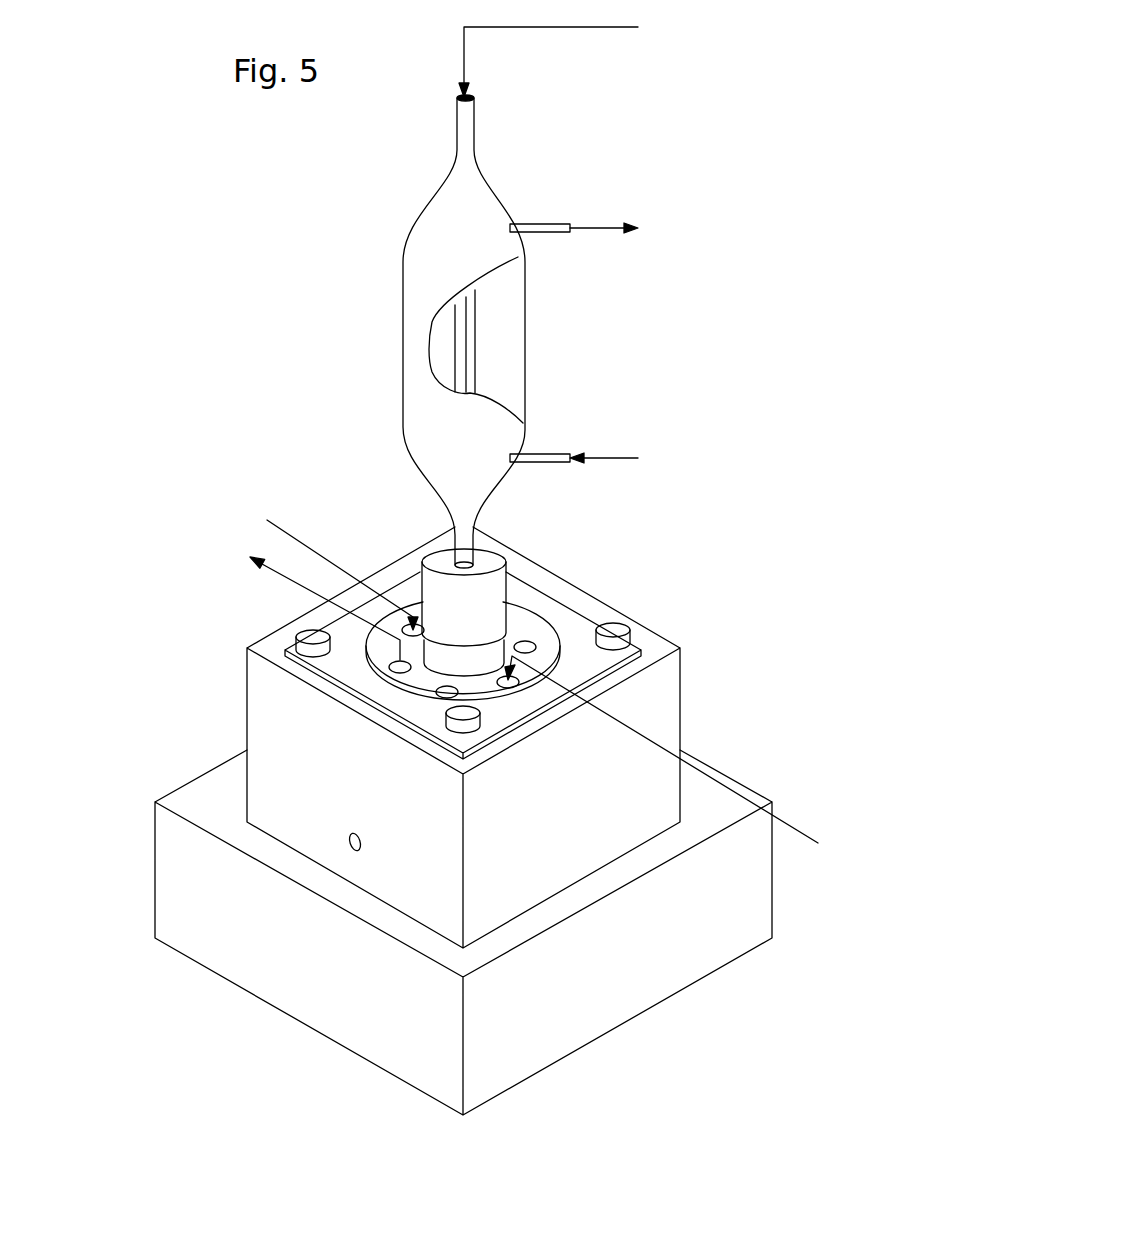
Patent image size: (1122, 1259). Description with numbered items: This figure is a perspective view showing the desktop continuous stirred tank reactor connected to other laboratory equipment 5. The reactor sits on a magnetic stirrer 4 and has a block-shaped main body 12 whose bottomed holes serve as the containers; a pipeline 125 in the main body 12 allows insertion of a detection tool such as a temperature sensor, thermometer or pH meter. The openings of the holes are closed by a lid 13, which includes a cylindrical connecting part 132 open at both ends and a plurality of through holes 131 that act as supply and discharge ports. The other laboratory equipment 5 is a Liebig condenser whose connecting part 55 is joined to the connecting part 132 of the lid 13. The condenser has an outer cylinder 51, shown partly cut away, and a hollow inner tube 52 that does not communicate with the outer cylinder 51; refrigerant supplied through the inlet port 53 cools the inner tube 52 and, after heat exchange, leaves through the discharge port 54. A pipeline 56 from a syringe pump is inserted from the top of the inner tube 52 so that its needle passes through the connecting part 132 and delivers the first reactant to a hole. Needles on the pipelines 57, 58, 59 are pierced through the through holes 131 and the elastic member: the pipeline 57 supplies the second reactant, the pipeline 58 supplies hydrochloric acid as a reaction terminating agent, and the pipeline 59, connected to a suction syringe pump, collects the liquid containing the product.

The magnetic stirrer 4 is at (653, 972).
The other laboratory equipment 5 is at (365, 300).
The main body 12 is at (288, 707).
The lid 13 is at (518, 632).
The outer cylinder 51 is at (403, 377).
The inner tube 52 is at (475, 320).
The inlet port 53 is at (540, 455).
The discharge port 54 is at (540, 224).
The connecting part 55 is at (443, 593).
The pipeline 56 is at (493, 30).
The pipeline 57 is at (640, 733).
The pipeline 58 is at (343, 563).
The pipeline 59 is at (278, 577).
The pipeline 125 is at (348, 832).
The through hole 131 is at (398, 662).
The connecting part 132 is at (465, 650).